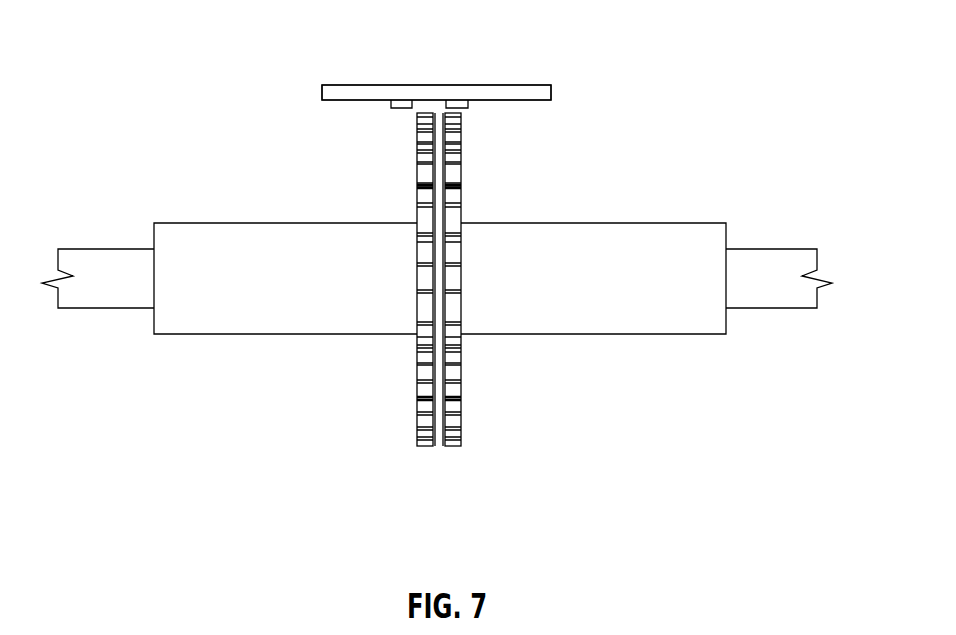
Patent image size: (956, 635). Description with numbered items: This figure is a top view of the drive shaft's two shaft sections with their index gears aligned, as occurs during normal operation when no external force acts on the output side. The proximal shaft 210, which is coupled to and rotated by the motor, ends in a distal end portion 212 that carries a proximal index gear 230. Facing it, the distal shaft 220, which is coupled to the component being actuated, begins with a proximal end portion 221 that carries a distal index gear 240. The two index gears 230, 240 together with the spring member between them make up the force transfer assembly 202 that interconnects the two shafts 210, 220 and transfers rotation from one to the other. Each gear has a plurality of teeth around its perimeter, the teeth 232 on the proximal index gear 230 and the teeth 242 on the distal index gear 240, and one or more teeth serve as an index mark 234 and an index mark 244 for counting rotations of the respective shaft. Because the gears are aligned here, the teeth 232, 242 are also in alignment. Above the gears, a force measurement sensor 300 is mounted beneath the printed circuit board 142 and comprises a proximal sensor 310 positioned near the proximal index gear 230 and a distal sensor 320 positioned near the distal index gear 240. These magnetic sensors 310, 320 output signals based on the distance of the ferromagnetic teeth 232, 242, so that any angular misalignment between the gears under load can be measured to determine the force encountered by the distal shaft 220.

The force measurement sensor 300 is at (426, 74).
The printed circuit board 142 is at (495, 95).
The distal sensor 320 is at (398, 111).
The proximal sensor 310 is at (462, 111).
The force transfer assembly 202 is at (448, 458).
The distal index gear 240 is at (420, 363).
The proximal index gear 230 is at (455, 363).
The index mark 244 is at (418, 187).
The index mark 234 is at (460, 187).
The teeth 242 is at (420, 398).
The teeth 232 is at (455, 398).
The proximal end portion 221 is at (217, 327).
The distal end portion 212 is at (660, 327).
The distal shaft 220 is at (113, 260).
The proximal shaft 210 is at (773, 260).